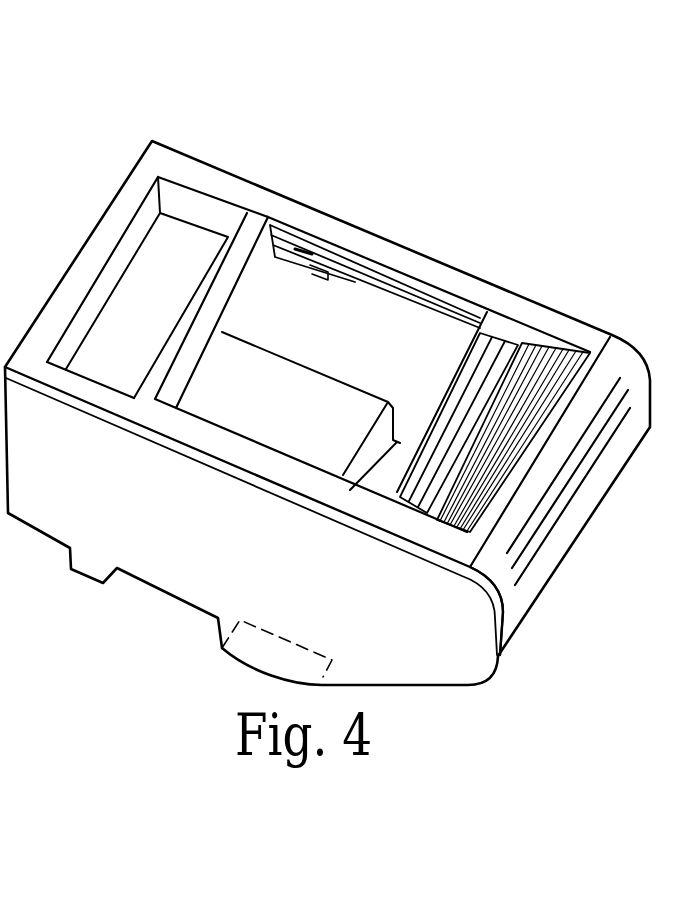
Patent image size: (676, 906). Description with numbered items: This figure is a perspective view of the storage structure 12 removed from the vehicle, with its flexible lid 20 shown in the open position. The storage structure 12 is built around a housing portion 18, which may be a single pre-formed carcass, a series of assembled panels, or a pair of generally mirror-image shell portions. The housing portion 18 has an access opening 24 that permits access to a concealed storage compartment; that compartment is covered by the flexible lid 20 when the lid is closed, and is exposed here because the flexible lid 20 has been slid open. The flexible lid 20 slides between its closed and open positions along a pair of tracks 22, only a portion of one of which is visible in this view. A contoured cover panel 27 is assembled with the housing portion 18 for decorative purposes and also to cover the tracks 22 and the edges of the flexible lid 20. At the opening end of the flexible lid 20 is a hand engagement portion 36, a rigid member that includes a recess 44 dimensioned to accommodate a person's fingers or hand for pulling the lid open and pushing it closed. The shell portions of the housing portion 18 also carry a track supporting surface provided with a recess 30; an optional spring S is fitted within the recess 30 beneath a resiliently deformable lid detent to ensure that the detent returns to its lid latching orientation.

The storage structure 12 is at (388, 154).
The housing portion 18 is at (433, 662).
The flexible lid 20 is at (577, 347).
The tracks 22 is at (385, 290).
The access opening 24 is at (262, 443).
The cover panel 27 is at (563, 327).
The recess 30 is at (312, 276).
The hand engagement portion 36 is at (483, 333).
The recess 44 is at (525, 340).
The spring S is at (280, 264).